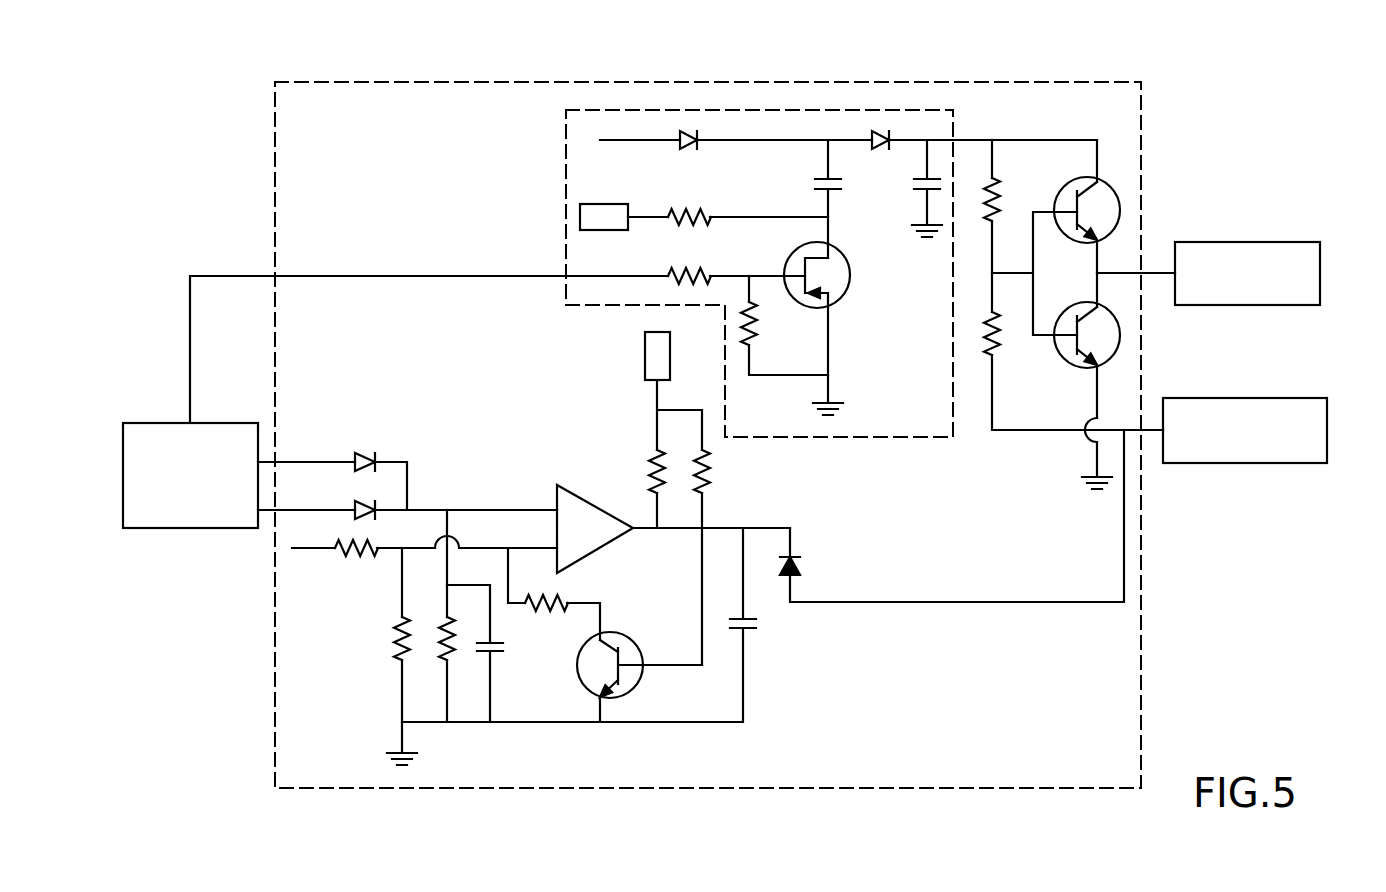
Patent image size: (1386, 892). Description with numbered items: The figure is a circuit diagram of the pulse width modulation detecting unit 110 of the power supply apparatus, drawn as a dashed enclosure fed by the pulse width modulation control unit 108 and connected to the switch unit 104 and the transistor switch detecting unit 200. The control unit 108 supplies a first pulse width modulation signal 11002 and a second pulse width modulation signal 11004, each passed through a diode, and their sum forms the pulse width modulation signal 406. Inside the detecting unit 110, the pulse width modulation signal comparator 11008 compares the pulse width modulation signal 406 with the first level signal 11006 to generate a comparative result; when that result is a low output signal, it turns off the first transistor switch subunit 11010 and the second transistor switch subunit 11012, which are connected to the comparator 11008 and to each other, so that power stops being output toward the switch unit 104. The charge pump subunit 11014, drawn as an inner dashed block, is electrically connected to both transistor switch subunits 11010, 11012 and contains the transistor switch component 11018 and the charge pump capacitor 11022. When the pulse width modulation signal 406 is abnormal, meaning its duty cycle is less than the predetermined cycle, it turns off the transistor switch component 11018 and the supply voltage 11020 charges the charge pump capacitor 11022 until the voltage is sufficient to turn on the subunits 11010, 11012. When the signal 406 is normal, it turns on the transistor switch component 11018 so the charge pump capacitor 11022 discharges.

The pulse width modulation detecting unit 110 is at (1118, 663).
The charge pump subunit 11014 is at (893, 425).
The supply voltage 11020 is at (623, 140).
The charge pump capacitor 11022 is at (935, 168).
The pulse width modulation signal 406 is at (418, 275).
The transistor switch component 11018 is at (832, 282).
The second transistor switch subunit 11012 is at (1105, 195).
The first transistor switch subunit 11010 is at (1110, 340).
The switch unit 104 is at (1285, 250).
The transistor switch detecting unit 200 is at (1290, 455).
The pulse width modulation signal comparator 11008 is at (593, 515).
The pulse width modulation control unit 108 is at (230, 430).
The first pulse width modulation signal 11002 is at (298, 458).
The second pulse width modulation signal 11004 is at (320, 505).
The first level signal 11006 is at (302, 553).